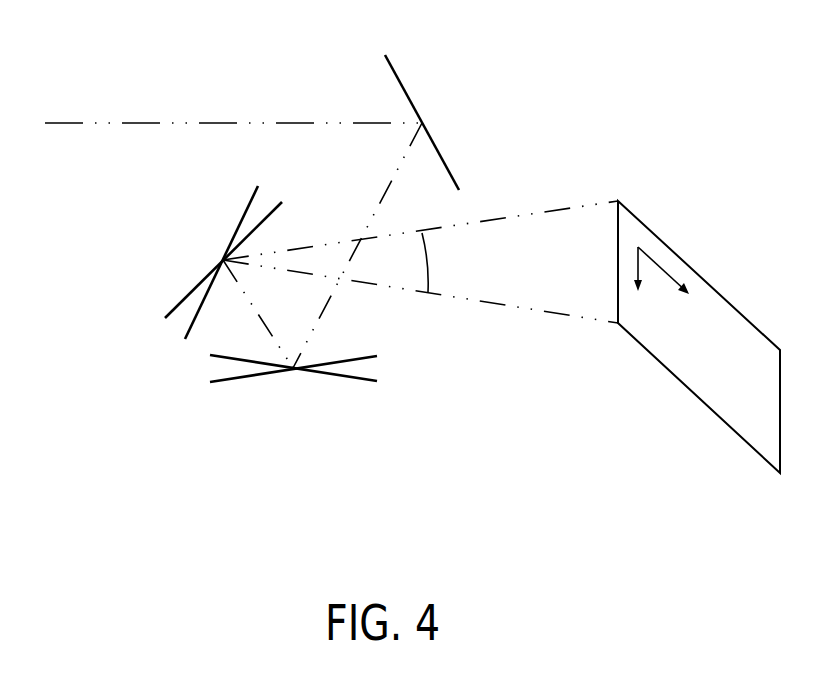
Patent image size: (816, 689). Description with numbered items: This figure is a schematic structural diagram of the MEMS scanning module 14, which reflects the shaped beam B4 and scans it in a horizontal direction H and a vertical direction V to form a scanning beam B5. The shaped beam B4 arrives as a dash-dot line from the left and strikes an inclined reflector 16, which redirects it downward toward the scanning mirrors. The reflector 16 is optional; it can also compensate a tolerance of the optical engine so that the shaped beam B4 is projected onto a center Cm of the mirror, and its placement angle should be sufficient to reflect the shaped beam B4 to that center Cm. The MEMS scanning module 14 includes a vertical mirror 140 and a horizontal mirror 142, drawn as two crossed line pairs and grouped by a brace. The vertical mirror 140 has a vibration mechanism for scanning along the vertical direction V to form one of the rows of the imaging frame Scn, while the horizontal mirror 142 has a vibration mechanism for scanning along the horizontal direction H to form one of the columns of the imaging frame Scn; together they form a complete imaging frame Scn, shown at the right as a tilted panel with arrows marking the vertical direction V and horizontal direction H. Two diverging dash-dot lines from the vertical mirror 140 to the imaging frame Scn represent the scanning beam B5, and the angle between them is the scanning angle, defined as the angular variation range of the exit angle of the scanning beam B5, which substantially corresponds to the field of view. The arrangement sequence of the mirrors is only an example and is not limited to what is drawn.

The MEMS scanning module 14 is at (235, 319).
The vertical mirror 140 is at (172, 314).
The horizontal mirror 142 is at (290, 403).
The reflector 16 is at (414, 106).
The shaped beam B4 is at (256, 123).
The scanning beam B5 is at (548, 314).
The center Cm is at (295, 372).
The imaging frame Scn is at (693, 268).
The vertical direction V is at (636, 280).
The horizontal direction H is at (673, 285).